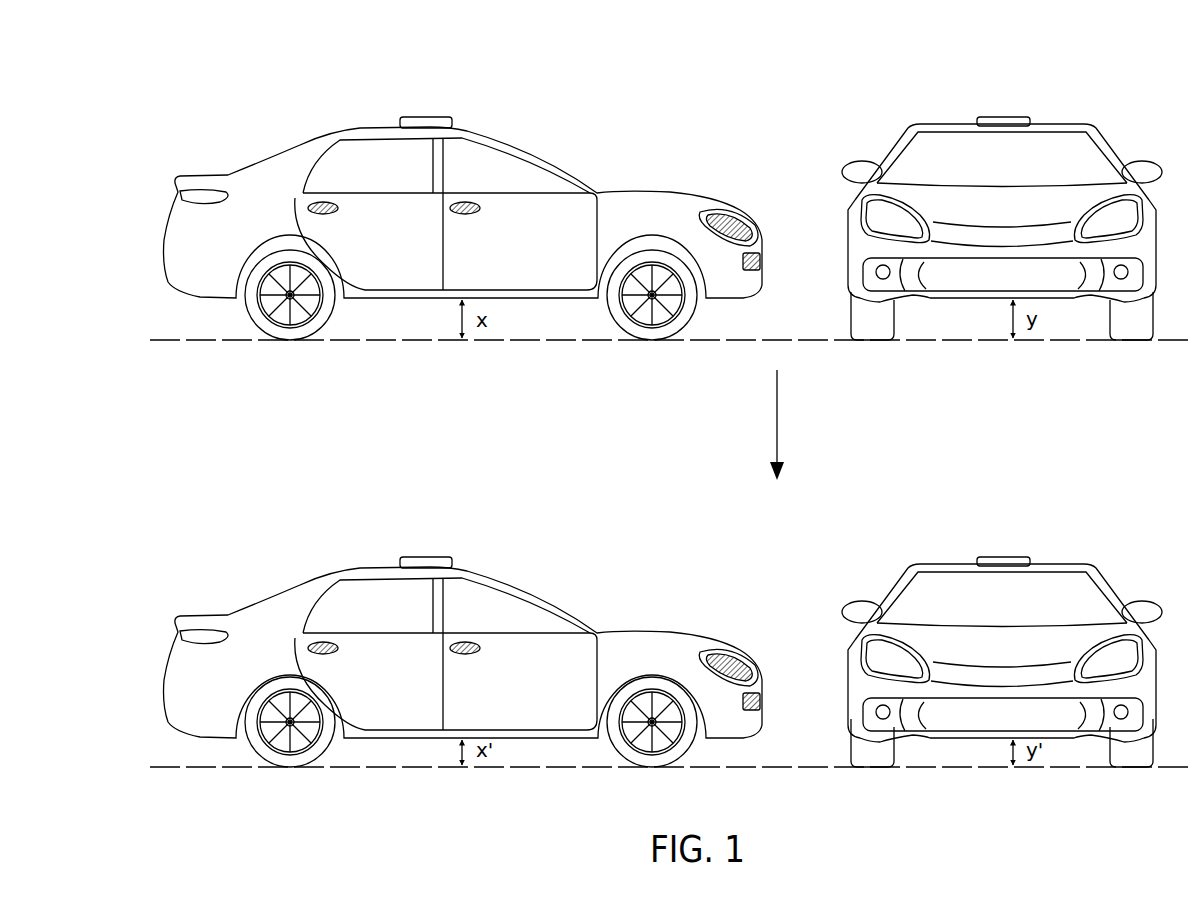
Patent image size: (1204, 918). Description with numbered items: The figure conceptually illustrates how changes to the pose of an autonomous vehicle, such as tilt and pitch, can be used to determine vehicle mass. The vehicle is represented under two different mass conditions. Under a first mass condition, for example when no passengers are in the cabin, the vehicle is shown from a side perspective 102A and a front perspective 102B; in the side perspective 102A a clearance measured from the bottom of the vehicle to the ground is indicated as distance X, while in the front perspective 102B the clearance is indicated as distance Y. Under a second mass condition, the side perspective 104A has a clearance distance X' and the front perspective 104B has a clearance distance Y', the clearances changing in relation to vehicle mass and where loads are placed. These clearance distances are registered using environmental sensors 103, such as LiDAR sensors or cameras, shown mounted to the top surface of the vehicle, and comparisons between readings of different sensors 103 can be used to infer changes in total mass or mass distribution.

The side perspective of the AV under the first mass condition 102A is at (290, 103).
The front perspective of the AV under the first mass condition 102B is at (872, 105).
The environmental sensors 103 is at (444, 117).
The side perspective of the AV under the second mass condition 104A is at (377, 540).
The front perspective of the AV under the second mass condition 104B is at (955, 540).